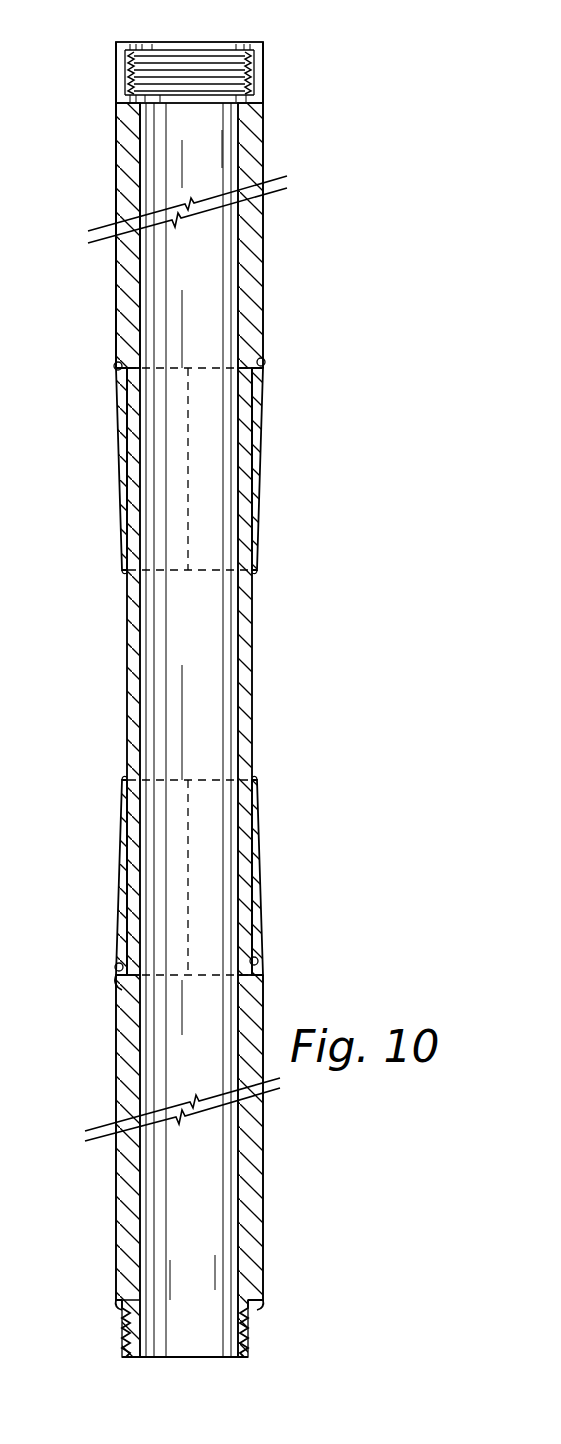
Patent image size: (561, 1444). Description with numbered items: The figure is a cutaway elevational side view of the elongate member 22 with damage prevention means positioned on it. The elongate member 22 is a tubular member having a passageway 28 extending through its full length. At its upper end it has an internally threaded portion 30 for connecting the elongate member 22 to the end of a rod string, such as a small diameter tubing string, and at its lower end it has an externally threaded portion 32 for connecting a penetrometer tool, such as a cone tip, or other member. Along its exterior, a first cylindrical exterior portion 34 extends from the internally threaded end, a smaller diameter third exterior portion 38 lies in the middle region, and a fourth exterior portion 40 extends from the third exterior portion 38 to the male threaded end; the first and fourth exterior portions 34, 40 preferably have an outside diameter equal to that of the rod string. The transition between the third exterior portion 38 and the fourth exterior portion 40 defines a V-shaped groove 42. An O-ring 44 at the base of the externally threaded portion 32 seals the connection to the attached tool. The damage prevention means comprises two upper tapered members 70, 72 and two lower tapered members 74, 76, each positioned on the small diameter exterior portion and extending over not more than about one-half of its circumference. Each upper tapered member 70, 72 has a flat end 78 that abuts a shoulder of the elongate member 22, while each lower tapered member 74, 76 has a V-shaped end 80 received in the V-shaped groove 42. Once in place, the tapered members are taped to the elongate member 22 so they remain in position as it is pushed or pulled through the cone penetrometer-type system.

The elongate member 22 is at (266, 140).
The passageway 28 is at (200, 285).
The internally threaded portion 30 is at (228, 42).
The externally threaded portion 32 is at (120, 1312).
The first cylindrical exterior portion 34 is at (117, 288).
The third exterior portion 38 is at (230, 690).
The fourth exterior portion 40 is at (118, 1058).
The V-shaped groove 42 is at (118, 978).
The O-ring 44 is at (256, 1318).
The upper tapered member 70 is at (120, 452).
The upper tapered member 72 is at (258, 445).
The lower tapered member 74 is at (122, 848).
The lower tapered member 76 is at (256, 846).
The flat end 78 is at (117, 362).
The V-shaped end 80 is at (118, 963).